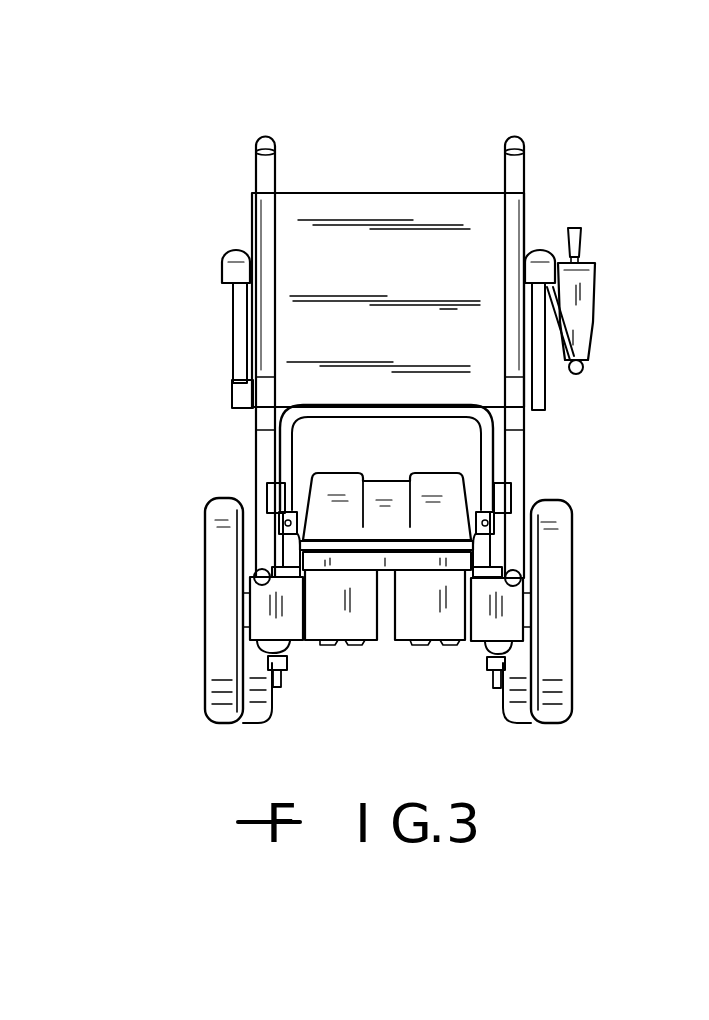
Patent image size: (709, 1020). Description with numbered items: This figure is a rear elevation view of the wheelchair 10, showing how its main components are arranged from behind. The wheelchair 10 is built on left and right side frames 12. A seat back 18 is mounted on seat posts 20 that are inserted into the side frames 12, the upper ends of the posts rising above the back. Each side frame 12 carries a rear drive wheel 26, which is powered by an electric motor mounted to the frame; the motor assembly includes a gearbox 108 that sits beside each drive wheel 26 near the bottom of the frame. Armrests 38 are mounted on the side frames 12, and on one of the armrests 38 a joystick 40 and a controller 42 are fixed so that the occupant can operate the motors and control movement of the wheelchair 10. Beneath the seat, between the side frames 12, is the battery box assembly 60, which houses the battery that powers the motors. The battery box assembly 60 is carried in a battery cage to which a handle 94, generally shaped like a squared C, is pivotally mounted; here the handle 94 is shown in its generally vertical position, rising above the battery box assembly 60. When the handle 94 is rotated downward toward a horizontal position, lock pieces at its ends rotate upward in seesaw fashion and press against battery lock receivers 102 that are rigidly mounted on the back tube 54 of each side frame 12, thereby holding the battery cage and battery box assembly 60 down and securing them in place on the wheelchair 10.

The wheelchair 10 is at (541, 101).
The side frames 12 is at (256, 452).
The seat back 18 is at (402, 193).
The seat posts 20 is at (275, 168).
The rear drive wheels 26 is at (205, 590).
The armrests 38 is at (222, 262).
The joystick 40 is at (582, 244).
The controller 42 is at (595, 299).
The back tube 54 is at (256, 478).
The battery box assembly 60 is at (338, 478).
The handle 94 is at (352, 405).
The battery lock receivers 102 is at (508, 500).
The gearbox 108 is at (475, 626).